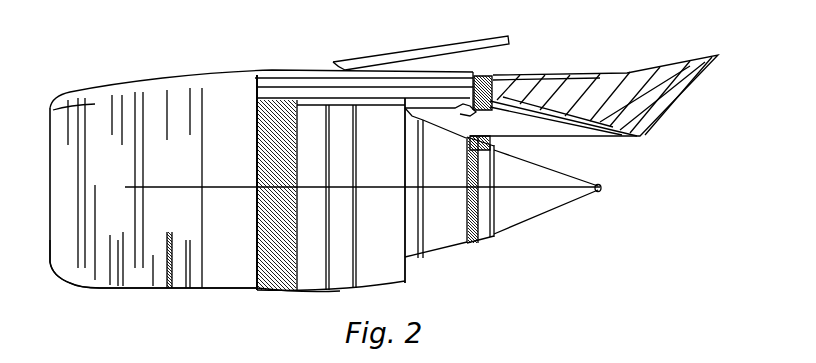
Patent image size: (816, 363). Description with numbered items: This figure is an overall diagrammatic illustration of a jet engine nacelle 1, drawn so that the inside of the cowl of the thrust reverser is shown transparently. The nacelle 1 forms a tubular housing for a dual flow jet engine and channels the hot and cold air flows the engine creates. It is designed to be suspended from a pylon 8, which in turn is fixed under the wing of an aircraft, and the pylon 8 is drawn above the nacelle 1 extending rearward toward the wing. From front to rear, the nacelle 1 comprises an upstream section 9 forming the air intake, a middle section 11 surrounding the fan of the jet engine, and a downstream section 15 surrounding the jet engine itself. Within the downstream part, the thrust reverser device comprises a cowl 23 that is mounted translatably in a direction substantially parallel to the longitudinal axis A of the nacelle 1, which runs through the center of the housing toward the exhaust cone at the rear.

The nacelle 1 is at (112, 76).
The pylon 8 is at (331, 60).
The upstream section 9 is at (97, 286).
The middle section 11 is at (176, 288).
The downstream section 15 is at (330, 291).
The cowl 23 is at (373, 257).
The longitudinal axis A is at (560, 193).